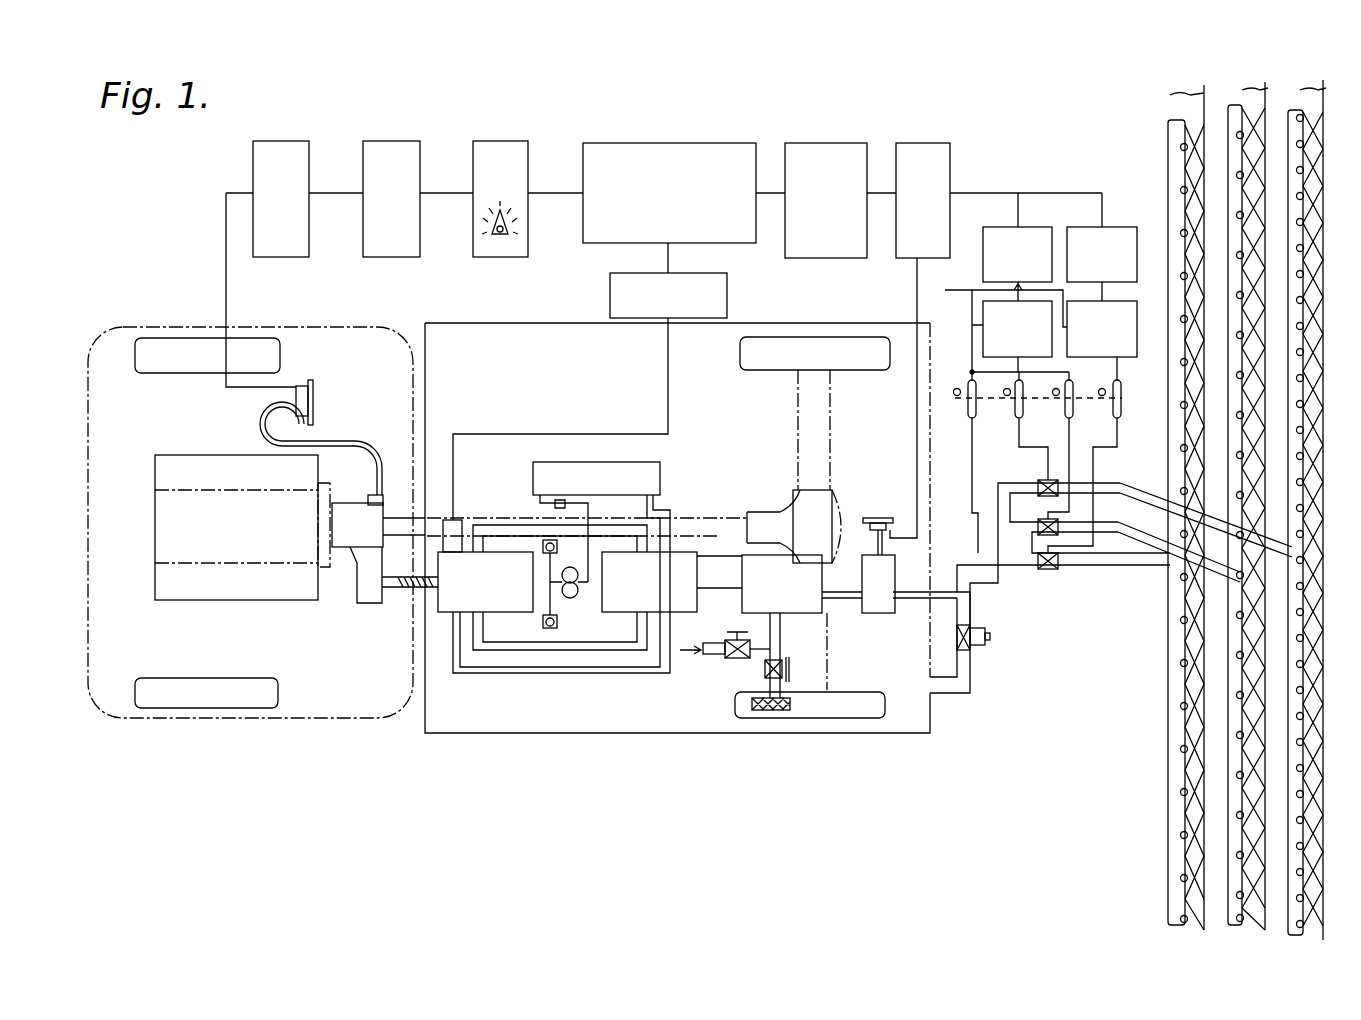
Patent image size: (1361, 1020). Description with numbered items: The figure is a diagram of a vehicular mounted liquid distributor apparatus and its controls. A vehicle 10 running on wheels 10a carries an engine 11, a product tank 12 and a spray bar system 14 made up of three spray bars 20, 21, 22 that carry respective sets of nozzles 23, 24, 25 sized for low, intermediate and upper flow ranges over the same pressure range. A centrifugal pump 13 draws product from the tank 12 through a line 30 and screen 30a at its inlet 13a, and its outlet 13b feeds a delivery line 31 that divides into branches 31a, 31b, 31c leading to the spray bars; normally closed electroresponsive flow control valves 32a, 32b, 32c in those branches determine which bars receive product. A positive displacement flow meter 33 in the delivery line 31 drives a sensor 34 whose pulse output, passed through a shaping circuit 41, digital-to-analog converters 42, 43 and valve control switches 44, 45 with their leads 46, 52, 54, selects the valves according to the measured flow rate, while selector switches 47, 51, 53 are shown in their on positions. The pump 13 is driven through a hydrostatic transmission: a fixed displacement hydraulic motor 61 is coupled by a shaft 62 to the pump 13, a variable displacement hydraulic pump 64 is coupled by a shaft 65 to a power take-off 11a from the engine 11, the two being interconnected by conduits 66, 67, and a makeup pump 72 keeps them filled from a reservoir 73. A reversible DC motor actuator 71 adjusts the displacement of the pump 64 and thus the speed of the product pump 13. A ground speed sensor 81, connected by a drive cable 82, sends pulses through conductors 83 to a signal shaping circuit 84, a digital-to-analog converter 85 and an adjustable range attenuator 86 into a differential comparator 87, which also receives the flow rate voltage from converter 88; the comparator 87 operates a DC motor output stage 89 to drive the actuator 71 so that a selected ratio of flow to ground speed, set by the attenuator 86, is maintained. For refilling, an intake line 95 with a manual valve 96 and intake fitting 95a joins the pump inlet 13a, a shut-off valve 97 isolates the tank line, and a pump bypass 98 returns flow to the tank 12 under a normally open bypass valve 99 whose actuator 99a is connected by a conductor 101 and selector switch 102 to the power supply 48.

The tractor vehicle 10 is at (215, 712).
The trailer wheels 10a is at (865, 710).
The engine 11 is at (225, 600).
The power take-off 11a is at (355, 600).
The tank 12 is at (560, 733).
The pump 13 is at (742, 605).
The pump inlet 13a is at (780, 618).
The pump outlet 13b is at (822, 570).
The spray bar system 14 is at (1158, 664).
The spray bar 20 is at (1286, 905).
The second spray bar 21 is at (1226, 895).
The spray bar 22 is at (1166, 893).
The spray nozzles 23 is at (1304, 780).
The nozzles 24 is at (1236, 843).
The third set of nozzles 25 is at (1180, 827).
The line 30 is at (780, 650).
The screen 30a is at (752, 704).
The delivery line 31 is at (860, 600).
The branch 31a is at (1112, 483).
The branch 31b is at (1105, 533).
The branch 31c is at (1100, 567).
The flow control valve 32a is at (1040, 478).
The flow control valve 32b is at (1040, 517).
The flow control valve 32c is at (1052, 570).
The positive displacement flow meter 33 is at (893, 600).
The flow rate sensor 34 is at (880, 517).
The signal shaping circuit 41 is at (940, 224).
The digital to analog converter 42 is at (1038, 227).
The digital to analog converter 43 is at (1122, 227).
The valve control switch 44 is at (983, 312).
The valve control switch 45 is at (1130, 306).
The switch lead 46 is at (1022, 438).
The selector switch 47 is at (1023, 405).
The power supply 48 is at (952, 290).
The selector switch 51 is at (1073, 405).
The switch lead 52 is at (1069, 440).
The selector switch 53 is at (1121, 400).
The switch lead 54 is at (1117, 440).
The fixed displacement hydraulic motor 61 is at (697, 560).
The shaft 62 is at (700, 578).
The variable displacement hydraulic pump 64 is at (493, 603).
The shaft 65 is at (395, 592).
The conduit 66 is at (512, 525).
The conduit 67 is at (513, 650).
The reversible DC motor actuator 71 is at (455, 520).
The fluid makeup pump 72 is at (572, 598).
The reservoir 73 is at (650, 470).
The ground speed sensor 81 is at (313, 395).
The drive cable 82 is at (338, 440).
The conductors 83 is at (226, 290).
The signal shaping circuit 84 is at (309, 237).
The digital-to-analog converter 85 is at (420, 150).
The adjustable range attenuator 86 is at (528, 241).
The differential comparator 87 is at (583, 168).
The digital-to-analog converter 88 is at (838, 243).
The DC motor output stage 89 is at (708, 290).
The intake line 95 is at (758, 652).
The intake fitting 95a is at (700, 660).
The manually operable valve 96 is at (728, 660).
The shut-off valve 97 is at (790, 680).
The pump bypass 98 is at (970, 668).
The bypass valve 99 is at (955, 635).
The actuator 99a is at (990, 637).
The conductor 101 is at (972, 500).
The selector switch 102 is at (968, 405).